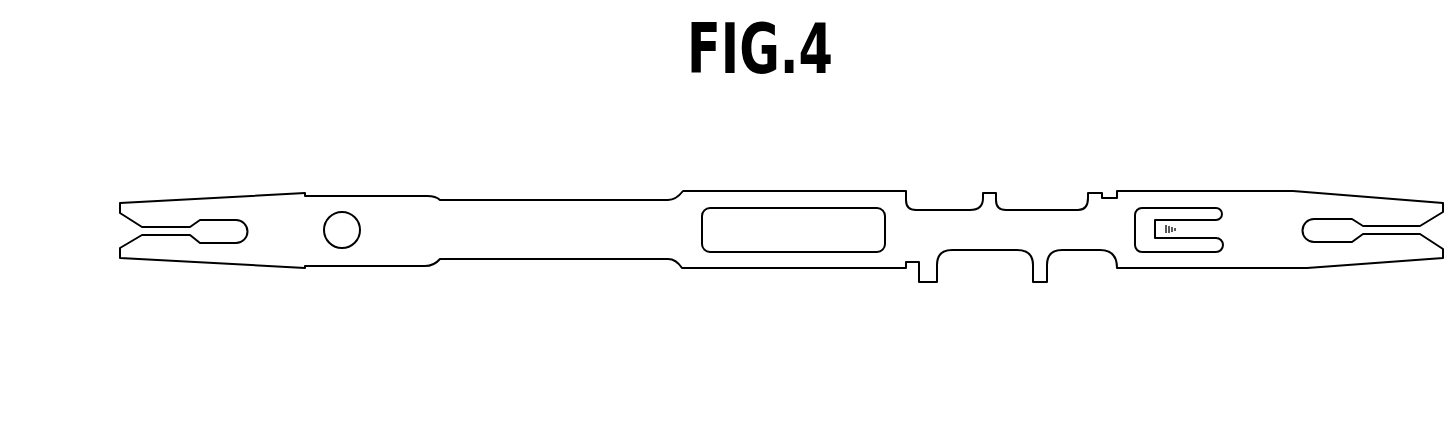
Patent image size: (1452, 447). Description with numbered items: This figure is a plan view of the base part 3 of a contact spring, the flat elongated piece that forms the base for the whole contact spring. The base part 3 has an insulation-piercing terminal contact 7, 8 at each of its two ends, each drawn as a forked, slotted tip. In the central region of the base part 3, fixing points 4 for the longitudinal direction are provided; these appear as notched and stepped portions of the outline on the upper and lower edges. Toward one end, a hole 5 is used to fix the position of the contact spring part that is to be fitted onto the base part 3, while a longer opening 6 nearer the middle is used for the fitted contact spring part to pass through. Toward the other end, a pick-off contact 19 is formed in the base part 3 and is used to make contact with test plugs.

The base part 3 is at (781, 205).
The fixing points 4 is at (996, 196).
The hole 5 is at (342, 238).
The opening 6 is at (813, 238).
The insulation-piercing terminal contact 7 is at (188, 255).
The insulation-piercing terminal contact 8 is at (1375, 248).
The pick-off contact 19 is at (1187, 228).